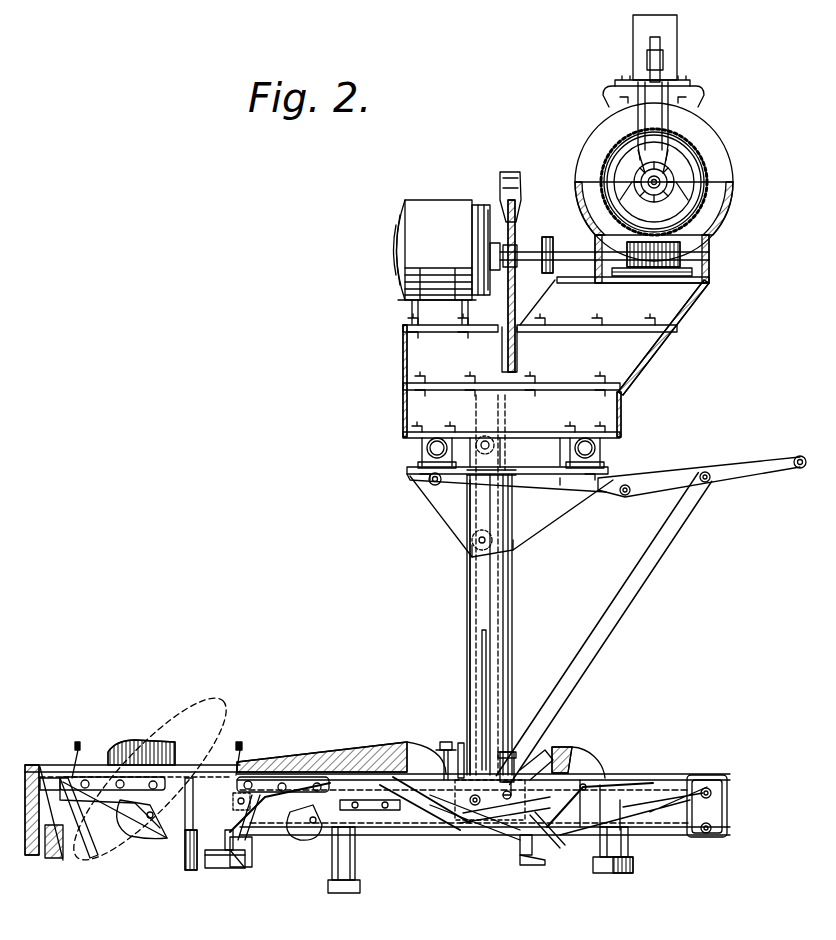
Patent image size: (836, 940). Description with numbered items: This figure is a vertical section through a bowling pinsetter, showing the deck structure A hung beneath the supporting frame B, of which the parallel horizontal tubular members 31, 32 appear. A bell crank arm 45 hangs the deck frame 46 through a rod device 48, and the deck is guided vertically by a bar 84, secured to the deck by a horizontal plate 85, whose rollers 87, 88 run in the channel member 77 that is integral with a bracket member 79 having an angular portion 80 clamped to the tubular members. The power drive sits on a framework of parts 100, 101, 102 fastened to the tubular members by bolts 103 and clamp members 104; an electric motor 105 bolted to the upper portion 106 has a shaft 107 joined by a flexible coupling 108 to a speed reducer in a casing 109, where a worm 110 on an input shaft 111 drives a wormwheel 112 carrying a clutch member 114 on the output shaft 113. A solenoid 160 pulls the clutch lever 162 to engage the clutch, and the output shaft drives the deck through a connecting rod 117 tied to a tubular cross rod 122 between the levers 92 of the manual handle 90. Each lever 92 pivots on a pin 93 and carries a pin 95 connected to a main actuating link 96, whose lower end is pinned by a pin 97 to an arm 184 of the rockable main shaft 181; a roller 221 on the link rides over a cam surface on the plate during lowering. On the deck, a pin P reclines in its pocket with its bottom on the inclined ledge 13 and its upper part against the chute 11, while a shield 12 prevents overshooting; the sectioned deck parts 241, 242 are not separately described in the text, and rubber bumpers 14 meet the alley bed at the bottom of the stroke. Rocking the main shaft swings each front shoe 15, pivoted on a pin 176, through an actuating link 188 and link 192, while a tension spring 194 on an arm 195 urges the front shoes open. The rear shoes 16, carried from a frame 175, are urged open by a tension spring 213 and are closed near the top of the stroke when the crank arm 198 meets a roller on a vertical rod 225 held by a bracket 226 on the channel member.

The electric solenoid 160 is at (672, 37).
The clutch lever 162 is at (705, 97).
The casing 109 is at (730, 187).
The wormwheel 112 is at (703, 207).
The clutch member 114 is at (698, 222).
The output shaft 113 is at (651, 188).
The worm 110 is at (700, 251).
The input shaft 111 is at (585, 282).
The electric motor 105 is at (433, 202).
The shaft 107 is at (512, 248).
The flexible coupling 108 is at (548, 246).
The arm 45 is at (517, 298).
The framework part 102 is at (680, 304).
The framework part 101 is at (650, 352).
The framework part 100 is at (622, 405).
The upper portion of the framework 106 is at (447, 335).
The bolts 103 is at (418, 445).
The horizontal tubular member 32 is at (410, 452).
The horizontal tubular member 31 is at (605, 448).
The angular portion 80 is at (532, 470).
The clamp members 104 is at (405, 470).
The roller 88 is at (445, 500).
The pivot pin 93 is at (430, 484).
The bracket member 79 is at (552, 508).
The roller 87 is at (470, 562).
The rod device 48 is at (512, 606).
The supporting frame B is at (455, 608).
The channel member 77 is at (470, 648).
The bar 84 is at (484, 650).
The lever 92 is at (733, 470).
The handle 90 is at (798, 455).
The pivot pin 95 is at (703, 472).
The tubular cross rod 122 is at (625, 496).
The link 96 is at (645, 585).
The roller 221 is at (512, 750).
The bracket 226 is at (458, 750).
The vertical rod 225 is at (444, 760).
The front shoe 15 is at (52, 770).
The frame 175 is at (32, 765).
The pad 241 is at (125, 740).
The pin P is at (162, 738).
The shield 12 is at (78, 742).
The chute 11 is at (365, 725).
The inclined ledge 13 is at (62, 862).
The rear shoe 16 is at (138, 832).
The deck frame 46 is at (190, 840).
The rubber bumper 14 is at (235, 870).
The connecting rod 117 is at (253, 816).
The pivot pin 176 is at (275, 765).
The pad 242 is at (298, 745).
The link 192 is at (378, 745).
The tension spring 213 is at (668, 760).
The deck structure A is at (742, 799).
The horizontal plate 85 is at (565, 755).
The pin 97 is at (550, 745).
The crank arm 198 is at (410, 830).
The actuating link 188 is at (445, 840).
The arm 184 is at (495, 845).
The main shaft 181 is at (526, 866).
The arm 195 is at (545, 850).
The tension spring 194 is at (568, 822).